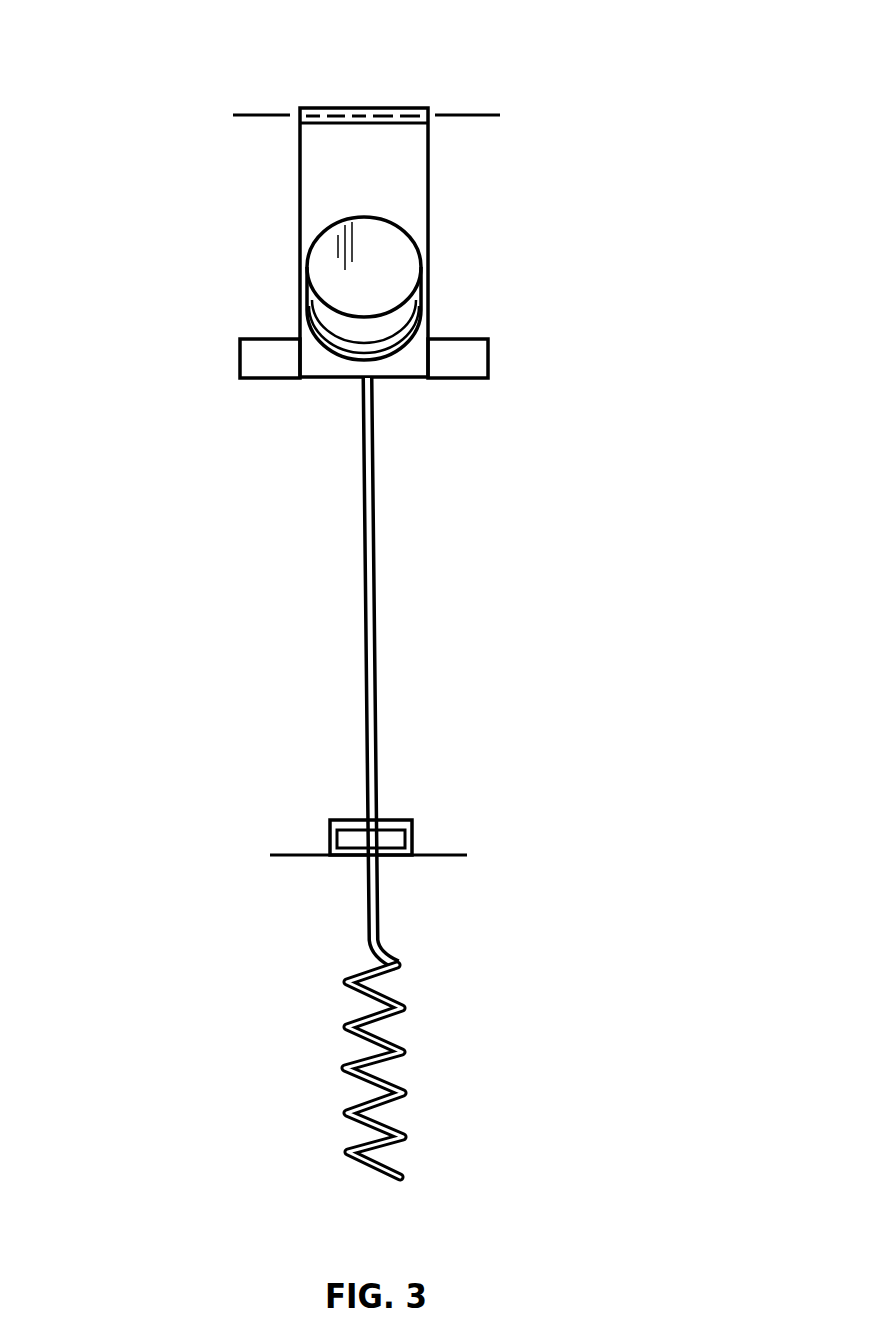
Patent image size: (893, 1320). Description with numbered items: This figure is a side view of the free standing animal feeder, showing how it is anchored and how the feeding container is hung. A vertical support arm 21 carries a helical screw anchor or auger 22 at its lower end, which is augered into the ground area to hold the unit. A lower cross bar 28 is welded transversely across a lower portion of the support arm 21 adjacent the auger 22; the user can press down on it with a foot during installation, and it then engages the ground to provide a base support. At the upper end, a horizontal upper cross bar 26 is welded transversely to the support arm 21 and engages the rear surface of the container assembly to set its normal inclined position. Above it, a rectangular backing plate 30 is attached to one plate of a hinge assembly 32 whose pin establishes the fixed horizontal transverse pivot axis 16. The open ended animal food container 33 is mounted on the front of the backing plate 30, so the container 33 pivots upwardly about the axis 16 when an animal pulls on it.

The pivot axis 16 is at (478, 114).
The support arm 21 is at (363, 628).
The helical screw anchor or auger 22 is at (400, 967).
The upper cross bar 26 is at (240, 365).
The lower cross bar 28 is at (412, 822).
The backing plate 30 is at (430, 186).
The hinge assembly 32 is at (372, 110).
The animal food container 33 is at (305, 277).